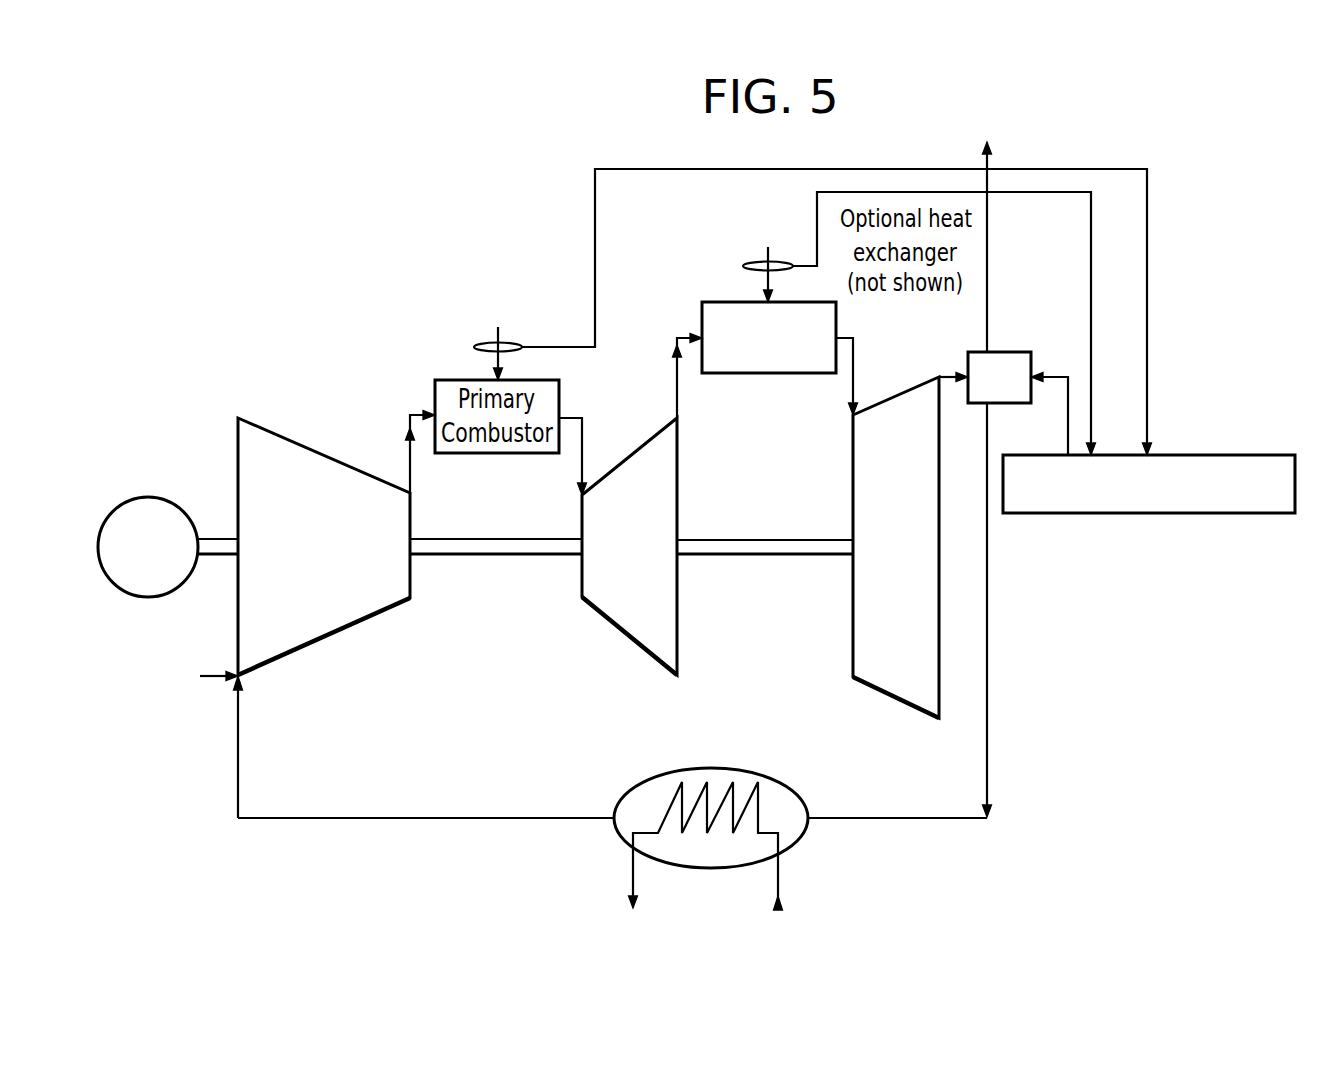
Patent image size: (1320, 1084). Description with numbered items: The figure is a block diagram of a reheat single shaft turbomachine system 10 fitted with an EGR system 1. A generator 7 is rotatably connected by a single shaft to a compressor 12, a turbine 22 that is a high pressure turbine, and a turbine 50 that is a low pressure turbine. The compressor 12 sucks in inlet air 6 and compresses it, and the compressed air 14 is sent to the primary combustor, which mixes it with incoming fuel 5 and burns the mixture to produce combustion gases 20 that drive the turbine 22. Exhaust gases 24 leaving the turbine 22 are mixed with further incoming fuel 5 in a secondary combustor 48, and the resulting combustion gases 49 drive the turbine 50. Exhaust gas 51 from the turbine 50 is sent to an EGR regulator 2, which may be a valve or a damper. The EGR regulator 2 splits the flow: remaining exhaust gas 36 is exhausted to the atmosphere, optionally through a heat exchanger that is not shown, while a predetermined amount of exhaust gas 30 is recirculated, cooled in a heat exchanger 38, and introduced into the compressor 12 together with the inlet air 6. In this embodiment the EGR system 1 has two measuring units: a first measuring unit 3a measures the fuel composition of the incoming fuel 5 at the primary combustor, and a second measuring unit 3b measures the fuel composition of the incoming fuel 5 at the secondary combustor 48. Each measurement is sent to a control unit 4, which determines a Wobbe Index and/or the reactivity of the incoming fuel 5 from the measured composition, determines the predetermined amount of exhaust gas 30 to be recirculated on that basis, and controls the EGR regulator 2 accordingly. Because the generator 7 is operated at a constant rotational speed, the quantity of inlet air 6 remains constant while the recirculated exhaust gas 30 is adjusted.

The EGR system 1 is at (1219, 290).
The EGR regulator 2 is at (1002, 352).
The first measuring unit 3a is at (483, 342).
The second measuring unit 3b is at (749, 268).
The control unit 4 is at (1200, 455).
The incoming fuel 5 is at (501, 336).
The inlet air 6 is at (183, 682).
The generator 7 is at (150, 497).
The turbomachine system 10 is at (383, 202).
The compressor 12 is at (297, 444).
The compressed air 14 is at (411, 474).
The combustion gases 20 is at (583, 441).
The turbine 22 is at (617, 627).
The exhaust gases 24 is at (678, 391).
The exhaust gas to be recirculated 30 is at (988, 716).
The remaining exhaust gas 36 is at (984, 162).
The heat exchanger 38 is at (795, 851).
The secondary combustor 48 is at (794, 375).
The combustion gases 49 is at (855, 353).
The turbine 50 is at (853, 637).
The exhaust gas 51 is at (945, 373).